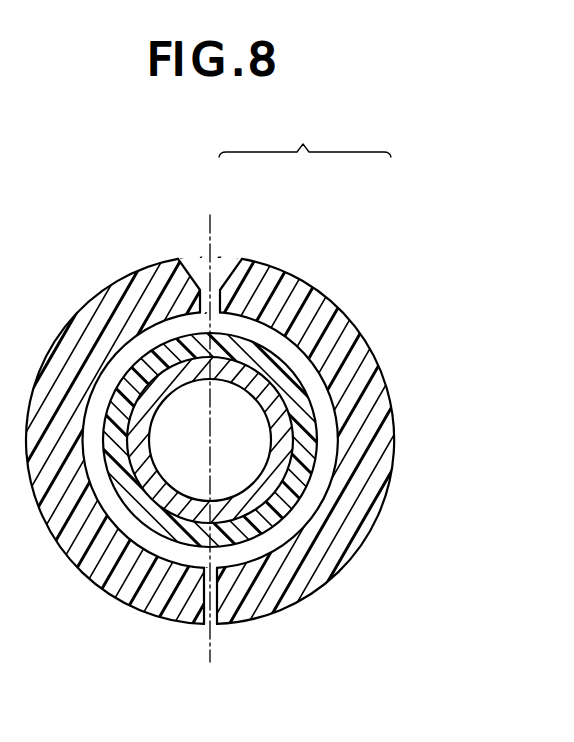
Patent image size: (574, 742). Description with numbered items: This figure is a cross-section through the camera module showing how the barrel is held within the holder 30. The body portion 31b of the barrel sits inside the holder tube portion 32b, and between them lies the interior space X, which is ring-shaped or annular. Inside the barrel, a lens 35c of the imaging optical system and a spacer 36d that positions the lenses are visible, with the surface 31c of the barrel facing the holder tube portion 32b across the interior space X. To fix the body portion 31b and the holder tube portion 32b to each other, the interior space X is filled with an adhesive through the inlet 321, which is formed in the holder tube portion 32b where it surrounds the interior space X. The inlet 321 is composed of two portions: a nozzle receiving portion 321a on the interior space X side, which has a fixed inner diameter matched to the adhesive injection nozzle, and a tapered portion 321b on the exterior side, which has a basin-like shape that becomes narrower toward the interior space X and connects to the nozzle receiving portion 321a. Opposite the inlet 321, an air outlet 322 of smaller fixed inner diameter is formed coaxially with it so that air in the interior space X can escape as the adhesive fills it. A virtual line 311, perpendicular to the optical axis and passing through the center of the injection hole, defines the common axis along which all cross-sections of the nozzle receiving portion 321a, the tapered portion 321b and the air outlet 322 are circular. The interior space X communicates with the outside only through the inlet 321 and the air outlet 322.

The housing 30 is at (251, 438).
The holder tube portion 32b is at (342, 540).
The annular gap 31c is at (282, 342).
The virtual line 311 is at (210, 223).
The air outlet 322 is at (208, 605).
The inlet 321 is at (305, 136).
The nozzle receiving portion 321a is at (209, 303).
The tapered portion 321b is at (240, 254).
The interior space X is at (129, 357).
The body portion 31b is at (303, 427).
The spacer 36d is at (270, 396).
The lens 35c is at (232, 465).